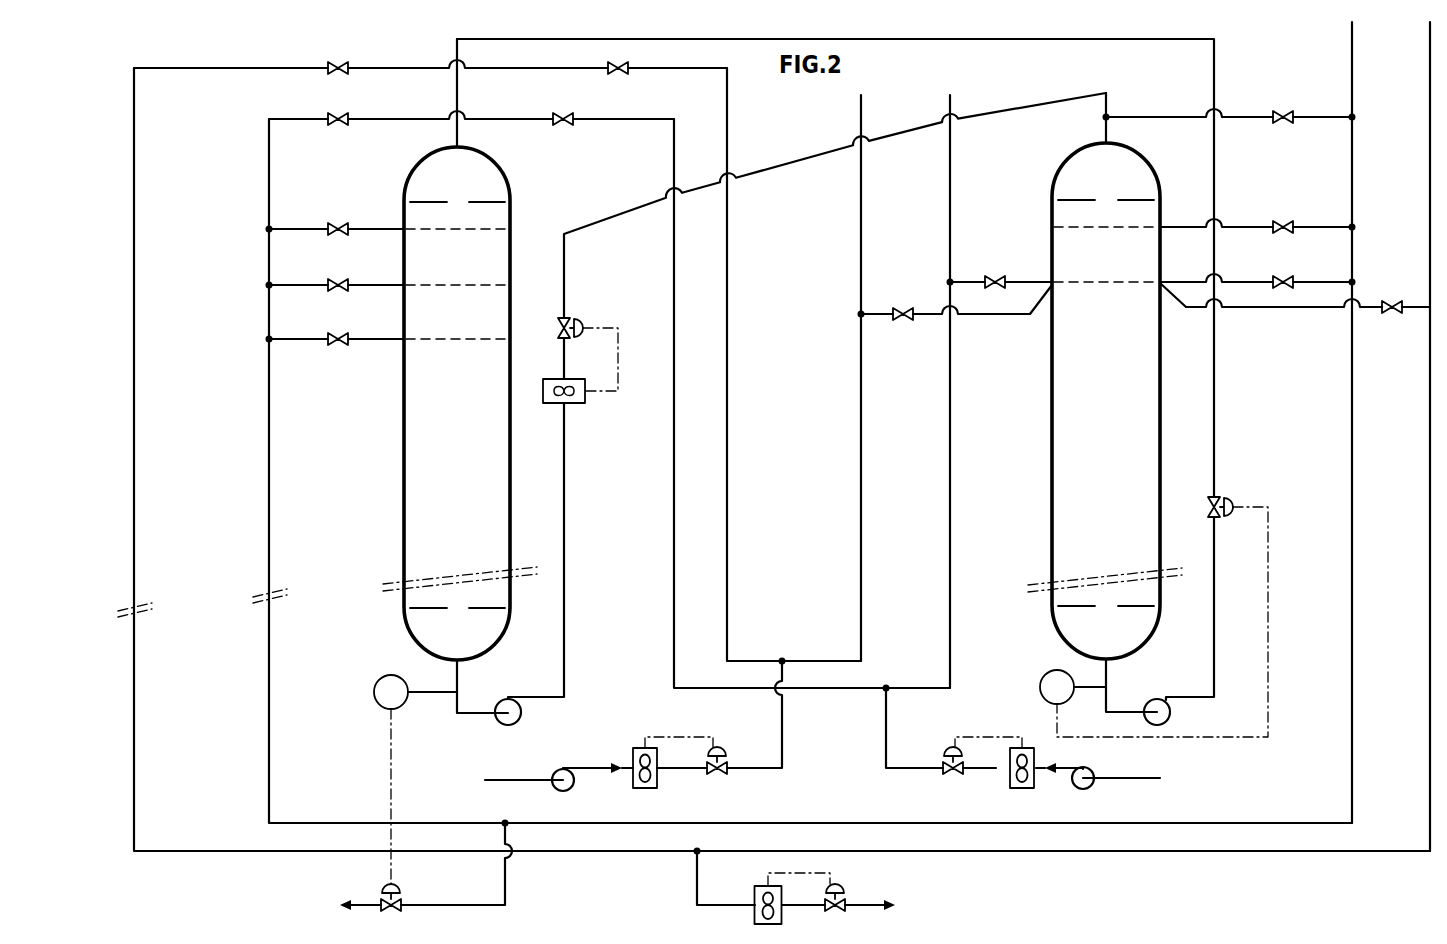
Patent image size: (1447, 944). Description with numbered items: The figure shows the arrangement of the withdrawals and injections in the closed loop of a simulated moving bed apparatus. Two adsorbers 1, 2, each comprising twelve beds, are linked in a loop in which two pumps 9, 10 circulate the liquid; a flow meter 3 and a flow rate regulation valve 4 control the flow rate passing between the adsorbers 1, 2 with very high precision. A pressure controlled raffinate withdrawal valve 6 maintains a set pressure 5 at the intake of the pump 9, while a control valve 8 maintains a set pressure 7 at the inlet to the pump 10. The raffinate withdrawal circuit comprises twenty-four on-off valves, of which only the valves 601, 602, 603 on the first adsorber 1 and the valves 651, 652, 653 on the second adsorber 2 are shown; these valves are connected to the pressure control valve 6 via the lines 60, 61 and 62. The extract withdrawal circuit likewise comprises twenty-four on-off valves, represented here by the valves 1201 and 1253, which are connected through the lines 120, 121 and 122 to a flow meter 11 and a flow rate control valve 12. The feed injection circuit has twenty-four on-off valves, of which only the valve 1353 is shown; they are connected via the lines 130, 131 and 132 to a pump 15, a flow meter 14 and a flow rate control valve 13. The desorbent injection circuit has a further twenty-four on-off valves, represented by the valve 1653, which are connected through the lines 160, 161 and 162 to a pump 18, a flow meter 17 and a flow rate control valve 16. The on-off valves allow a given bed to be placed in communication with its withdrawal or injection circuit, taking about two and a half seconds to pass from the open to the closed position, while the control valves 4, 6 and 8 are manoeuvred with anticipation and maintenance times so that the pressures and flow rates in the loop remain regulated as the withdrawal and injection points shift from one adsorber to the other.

The adsorber 1 is at (463, 452).
The adsorber 2 is at (1112, 452).
The flow meter 3 is at (585, 395).
The flow rate regulation valve 4 is at (578, 324).
The set pressure 5 is at (415, 779).
The pressure controlled raffinate withdrawal valve 6 is at (387, 887).
The set pressure 7 is at (1073, 687).
The control valve 8 is at (1216, 494).
The pump 9 is at (506, 700).
The pump 10 is at (1156, 698).
The flow meter 11 is at (767, 886).
The flow rate control valve 12 is at (846, 885).
The flow rate control valve 13 is at (725, 760).
The flow meter 14 is at (640, 748).
The pump 15 is at (560, 768).
The flow rate control valve 16 is at (947, 766).
The flow meter 17 is at (1030, 748).
The pump 18 is at (1092, 771).
The line 60 is at (269, 481).
The line 61 is at (1352, 426).
The line 62 is at (508, 900).
The line 120 is at (134, 481).
The line 121 is at (1430, 418).
The line 122 is at (697, 890).
The line 130 is at (728, 479).
The line 131 is at (861, 440).
The line 132 is at (782, 737).
The line 160 is at (673, 485).
The line 161 is at (950, 418).
The line 162 is at (886, 756).
The on-off valve 601 is at (338, 112).
The on-off valve 602 is at (338, 222).
The on-off valve 603 is at (338, 278).
The on-off valve 651 is at (1277, 109).
The on-off valve 652 is at (1277, 218).
The on-off valve 653 is at (1278, 275).
The on-off valve 1201 is at (338, 61).
The on-off valve 1253 is at (1386, 302).
The on-off valve 1353 is at (925, 283).
The on-off valve 1653 is at (1012, 255).